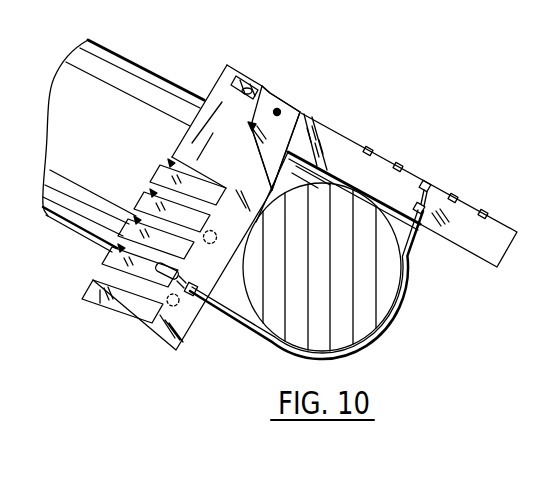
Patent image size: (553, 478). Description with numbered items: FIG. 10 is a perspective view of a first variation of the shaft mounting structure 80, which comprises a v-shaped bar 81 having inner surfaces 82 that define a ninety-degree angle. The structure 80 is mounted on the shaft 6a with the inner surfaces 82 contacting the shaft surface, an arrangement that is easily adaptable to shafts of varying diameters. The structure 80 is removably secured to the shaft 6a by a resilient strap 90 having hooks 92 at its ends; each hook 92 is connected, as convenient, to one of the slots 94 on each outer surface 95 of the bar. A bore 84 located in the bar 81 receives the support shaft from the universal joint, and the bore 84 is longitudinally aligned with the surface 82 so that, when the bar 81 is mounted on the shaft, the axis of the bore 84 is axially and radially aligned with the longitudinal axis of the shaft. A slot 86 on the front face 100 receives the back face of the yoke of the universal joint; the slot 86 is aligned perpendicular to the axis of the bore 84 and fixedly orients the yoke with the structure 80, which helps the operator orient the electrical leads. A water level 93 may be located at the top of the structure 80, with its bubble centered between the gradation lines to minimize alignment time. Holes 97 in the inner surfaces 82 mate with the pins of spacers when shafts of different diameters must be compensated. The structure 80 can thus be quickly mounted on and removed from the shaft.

The shaft 6a is at (113, 63).
The mounting structure 80 is at (275, 63).
The v-shaped bar 81 is at (222, 79).
The inner surfaces 82 is at (455, 249).
The bore 84 is at (285, 106).
The slot 86 is at (305, 117).
The resilient strap 90 is at (267, 342).
The hooks 92 is at (427, 187).
The water level 93 is at (243, 86).
The slots 94 is at (134, 220).
The outer surface 95 is at (100, 297).
The holes 97 is at (210, 245).
The front face 100 is at (236, 185).